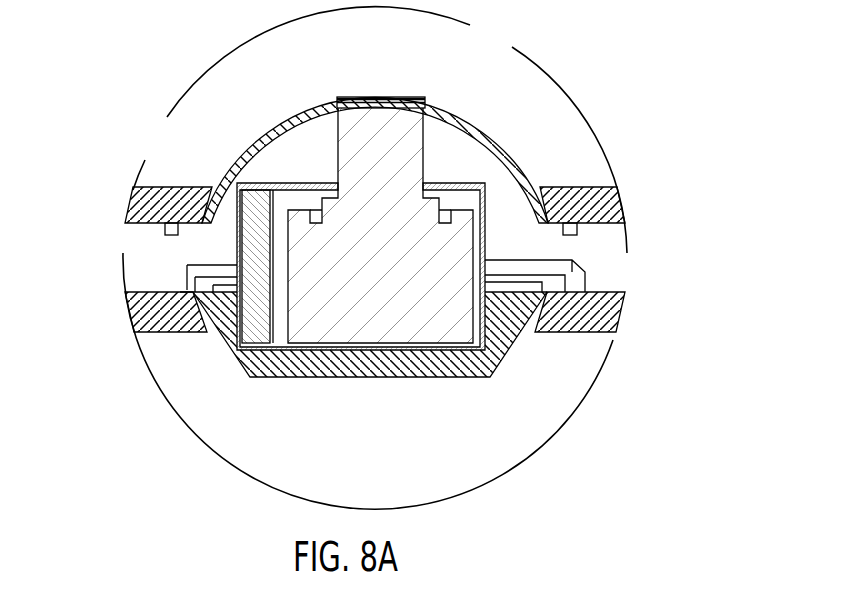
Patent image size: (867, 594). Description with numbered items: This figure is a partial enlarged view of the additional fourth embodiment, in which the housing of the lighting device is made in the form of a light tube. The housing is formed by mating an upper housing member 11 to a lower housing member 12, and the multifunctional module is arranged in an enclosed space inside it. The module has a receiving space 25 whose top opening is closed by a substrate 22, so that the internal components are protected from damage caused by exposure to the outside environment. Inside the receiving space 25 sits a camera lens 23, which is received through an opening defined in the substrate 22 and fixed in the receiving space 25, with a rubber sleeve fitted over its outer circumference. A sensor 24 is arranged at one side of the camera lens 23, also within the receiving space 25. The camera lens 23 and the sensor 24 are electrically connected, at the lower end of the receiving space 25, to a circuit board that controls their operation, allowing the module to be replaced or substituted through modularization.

The upper housing member 11 is at (132, 205).
The lower housing member 12 is at (130, 318).
The substrate 22 is at (448, 185).
The camera lens 23 is at (400, 97).
The sensor 24 is at (247, 212).
The receiving space 25 is at (475, 250).